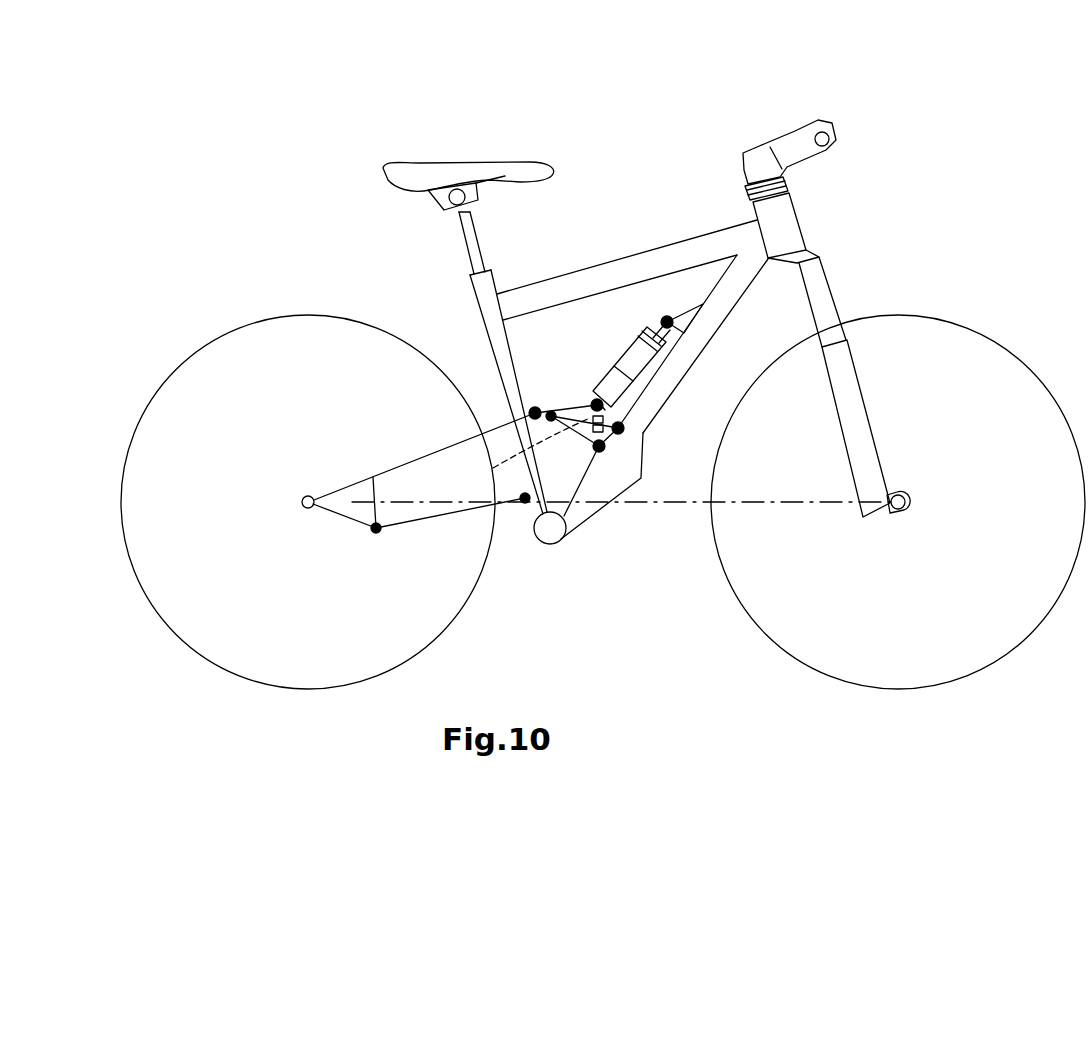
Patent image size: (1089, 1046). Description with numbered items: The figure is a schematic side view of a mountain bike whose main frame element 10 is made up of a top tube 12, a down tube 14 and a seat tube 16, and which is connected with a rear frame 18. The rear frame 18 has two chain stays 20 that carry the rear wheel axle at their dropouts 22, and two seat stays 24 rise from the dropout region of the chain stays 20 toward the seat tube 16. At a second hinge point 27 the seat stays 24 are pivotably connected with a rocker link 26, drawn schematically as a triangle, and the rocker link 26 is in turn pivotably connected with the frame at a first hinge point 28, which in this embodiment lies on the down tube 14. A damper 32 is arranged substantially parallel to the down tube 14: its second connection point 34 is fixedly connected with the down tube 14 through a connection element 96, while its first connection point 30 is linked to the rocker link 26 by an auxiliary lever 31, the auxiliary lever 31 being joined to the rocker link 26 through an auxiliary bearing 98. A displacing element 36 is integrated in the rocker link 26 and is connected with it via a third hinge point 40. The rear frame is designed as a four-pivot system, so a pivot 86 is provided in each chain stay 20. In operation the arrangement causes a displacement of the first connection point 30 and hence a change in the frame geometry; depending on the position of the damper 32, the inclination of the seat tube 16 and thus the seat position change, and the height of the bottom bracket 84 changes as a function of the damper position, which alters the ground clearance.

The main frame element 10 is at (618, 247).
The top tube 12 is at (687, 247).
The down tube 14 is at (665, 396).
The seat tube 16 is at (488, 313).
The rear frame 18 is at (348, 434).
The chain stays 20 is at (408, 522).
The dropouts 22 is at (308, 509).
The seat stays 24 is at (418, 455).
The rocker link 26 is at (573, 432).
The second hinge point 27 is at (535, 413).
The first hinge point 28 is at (619, 430).
The first connection point 30 is at (596, 404).
The auxiliary lever 31 is at (572, 416).
The damper 32 is at (664, 358).
The second connection point 34 is at (667, 318).
The displacing element 36 is at (494, 468).
The third hinge point 40 is at (600, 450).
The bottom bracket 84 is at (550, 529).
The pivot 86 is at (376, 533).
The connection element 96 is at (688, 321).
The auxiliary bearing 98 is at (551, 414).